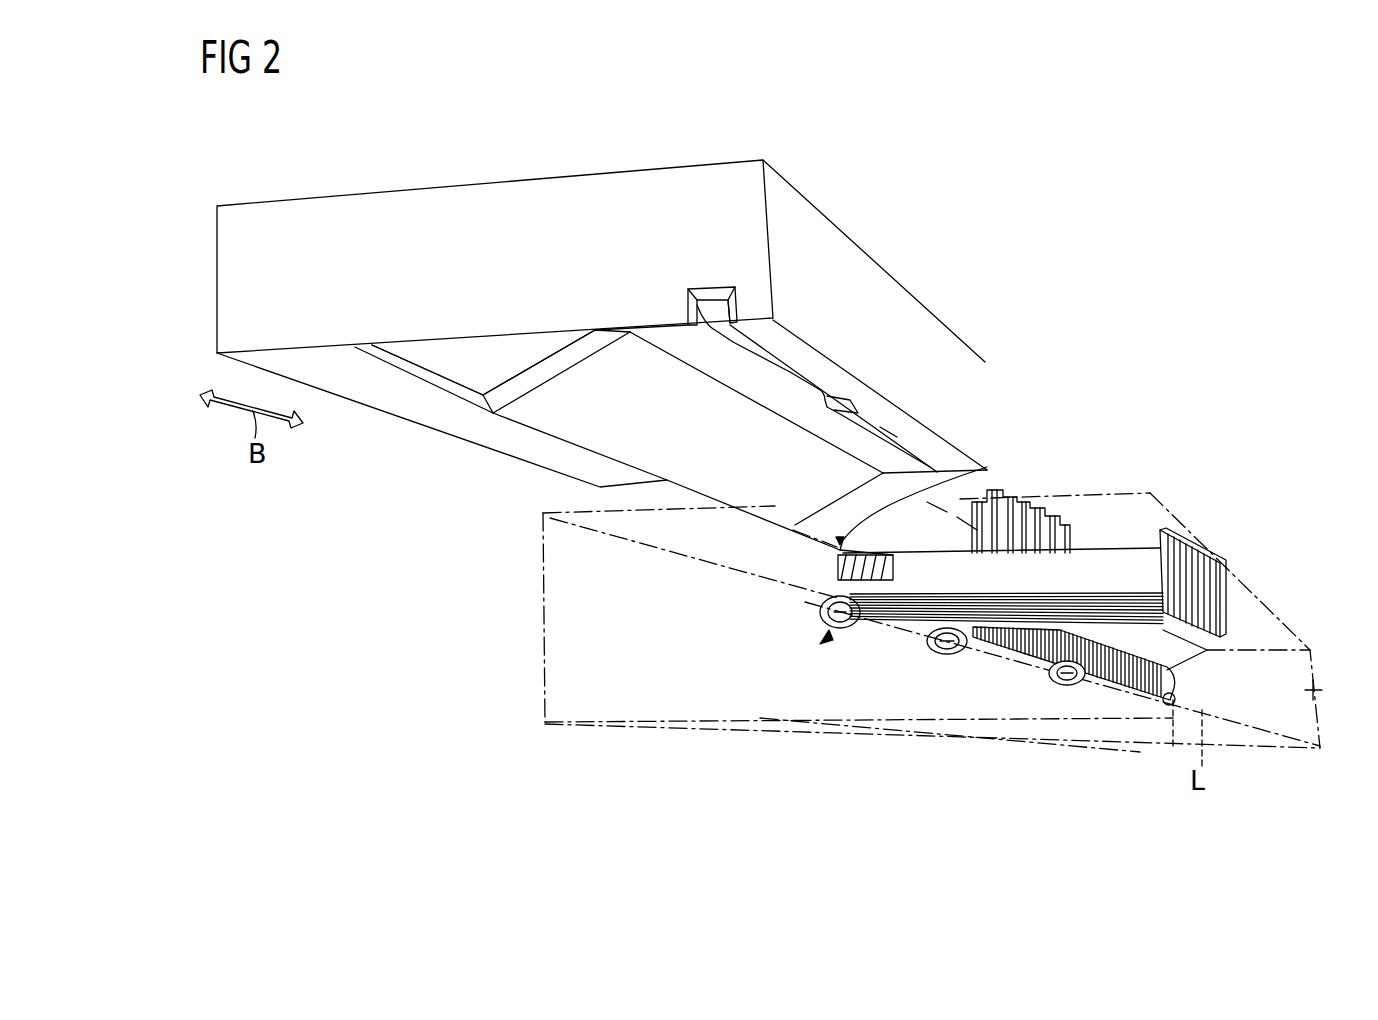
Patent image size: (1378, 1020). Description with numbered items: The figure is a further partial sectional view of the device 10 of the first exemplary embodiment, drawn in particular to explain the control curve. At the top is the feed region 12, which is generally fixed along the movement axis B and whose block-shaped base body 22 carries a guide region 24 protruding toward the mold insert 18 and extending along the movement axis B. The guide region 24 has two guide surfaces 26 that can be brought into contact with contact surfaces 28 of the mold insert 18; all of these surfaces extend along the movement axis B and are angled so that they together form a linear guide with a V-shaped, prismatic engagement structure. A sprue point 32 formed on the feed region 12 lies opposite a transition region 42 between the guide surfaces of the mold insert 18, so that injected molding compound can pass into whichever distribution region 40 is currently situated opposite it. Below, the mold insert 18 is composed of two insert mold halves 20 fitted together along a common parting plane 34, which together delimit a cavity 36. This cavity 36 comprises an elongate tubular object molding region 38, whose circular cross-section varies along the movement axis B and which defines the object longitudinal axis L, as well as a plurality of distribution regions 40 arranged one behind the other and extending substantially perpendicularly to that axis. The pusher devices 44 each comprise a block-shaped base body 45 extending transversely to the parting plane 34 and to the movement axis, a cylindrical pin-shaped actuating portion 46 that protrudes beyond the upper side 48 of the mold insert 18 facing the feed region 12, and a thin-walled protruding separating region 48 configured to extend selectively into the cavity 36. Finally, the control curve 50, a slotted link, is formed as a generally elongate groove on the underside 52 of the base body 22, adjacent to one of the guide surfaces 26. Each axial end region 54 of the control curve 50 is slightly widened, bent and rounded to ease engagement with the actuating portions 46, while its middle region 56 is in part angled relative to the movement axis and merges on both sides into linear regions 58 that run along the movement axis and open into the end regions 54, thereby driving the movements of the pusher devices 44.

The device 10 is at (368, 597).
The feed region 12 is at (250, 187).
The mold insert 18 is at (1130, 486).
The insert mold halves 20 is at (1322, 692).
The base body 22 is at (483, 203).
The guide region 24 is at (437, 407).
The guide surfaces 26 is at (403, 377).
The contact surfaces 28 is at (843, 553).
The sprue point 32 is at (630, 490).
The parting plane 34 is at (840, 630).
The cavity 36 is at (822, 640).
The object molding region 38 is at (1028, 663).
The distribution regions 40 is at (808, 545).
The transition region 42 is at (987, 470).
The pusher devices 44 is at (1213, 557).
The base body 45 is at (1117, 563).
The actuating portion 46 is at (1013, 485).
The upper side / separating region 48 is at (1265, 640).
The control curve 50 is at (697, 288).
The underside 52 is at (657, 323).
The end region 54 is at (697, 305).
The middle region 56 is at (860, 392).
The regions 58 is at (790, 385).